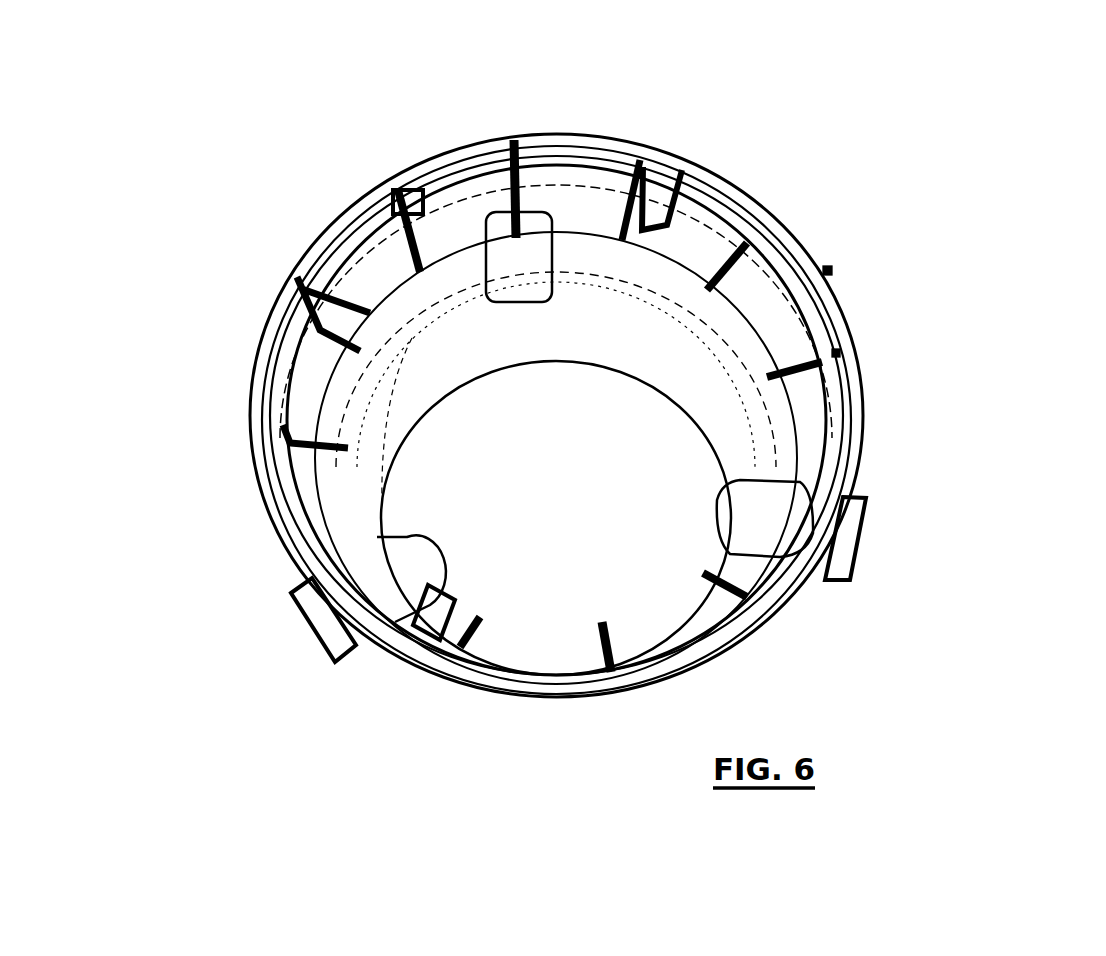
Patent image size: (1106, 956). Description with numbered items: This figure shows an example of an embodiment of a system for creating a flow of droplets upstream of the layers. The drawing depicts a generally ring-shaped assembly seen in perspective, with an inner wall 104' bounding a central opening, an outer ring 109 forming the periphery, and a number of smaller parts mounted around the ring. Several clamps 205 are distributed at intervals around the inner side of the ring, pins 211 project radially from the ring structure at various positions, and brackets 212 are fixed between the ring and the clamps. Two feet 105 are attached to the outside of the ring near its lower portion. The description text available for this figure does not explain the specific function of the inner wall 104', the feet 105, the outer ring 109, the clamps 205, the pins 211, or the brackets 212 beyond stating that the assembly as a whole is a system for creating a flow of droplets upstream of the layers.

The inner cylindrical wall 104' is at (625, 434).
The mounting feet 105 is at (862, 540).
The outer ring 109 is at (617, 142).
The clamps 205 is at (512, 268).
The pins 211 is at (514, 162).
The brackets 212 is at (675, 183).